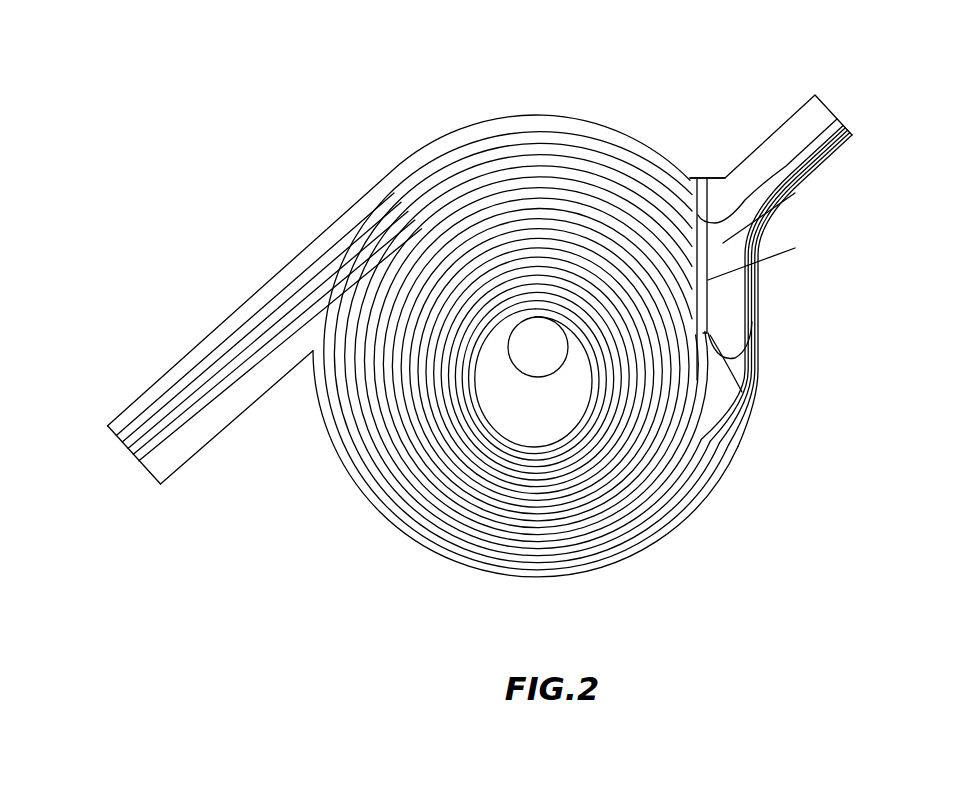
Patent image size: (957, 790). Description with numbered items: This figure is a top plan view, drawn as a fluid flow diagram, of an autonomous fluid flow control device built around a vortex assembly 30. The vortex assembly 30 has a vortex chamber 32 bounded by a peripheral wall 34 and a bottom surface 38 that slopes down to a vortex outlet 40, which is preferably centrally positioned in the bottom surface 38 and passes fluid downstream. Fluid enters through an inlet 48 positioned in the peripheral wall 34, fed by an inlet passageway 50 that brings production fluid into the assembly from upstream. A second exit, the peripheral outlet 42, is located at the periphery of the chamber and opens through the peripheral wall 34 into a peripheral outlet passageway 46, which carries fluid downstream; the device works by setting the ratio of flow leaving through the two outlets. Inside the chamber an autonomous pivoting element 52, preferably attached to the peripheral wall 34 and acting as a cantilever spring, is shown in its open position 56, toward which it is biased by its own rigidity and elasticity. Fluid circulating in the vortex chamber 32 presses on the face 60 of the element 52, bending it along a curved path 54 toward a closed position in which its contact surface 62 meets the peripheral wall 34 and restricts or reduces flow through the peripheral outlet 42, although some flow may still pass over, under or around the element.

The vortex assembly 30 is at (842, 353).
The vortex chamber 32 is at (620, 520).
The peripheral wall 34 is at (602, 572).
The bottom surface 38 is at (490, 478).
The vortex outlet 40 is at (547, 367).
The peripheral outlet 42 is at (755, 213).
The peripheral outlet passageway 46 is at (813, 157).
The inlet 48 is at (297, 307).
The inlet passageway 50 is at (155, 443).
The autonomous pivoting element 52 is at (745, 237).
The path 54 is at (712, 307).
The open position 56 is at (700, 156).
The face 60 is at (657, 200).
The contact surface 62 is at (717, 360).